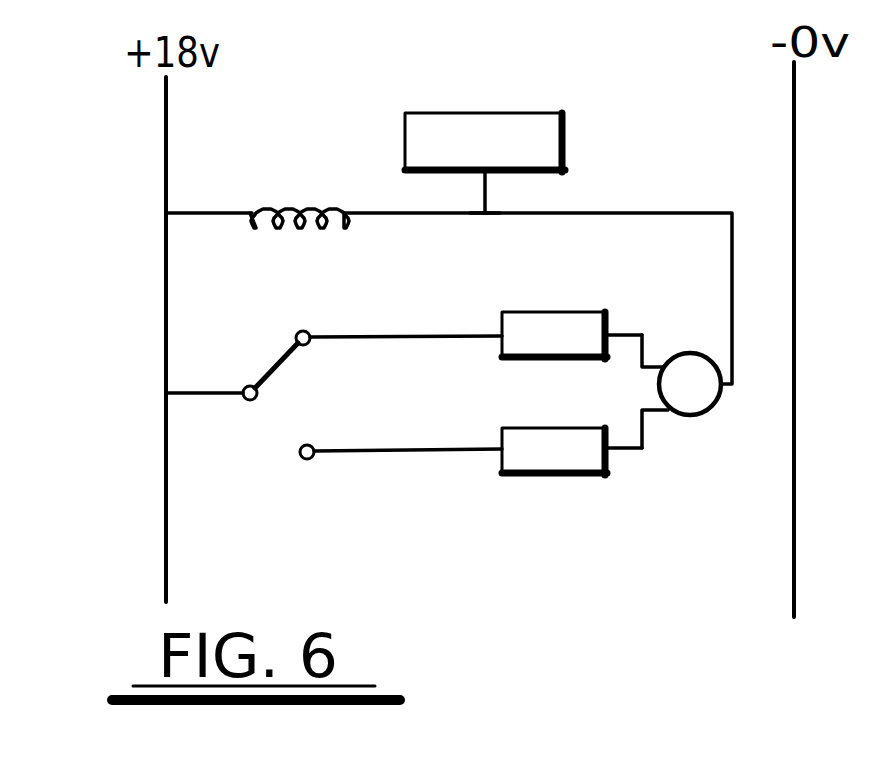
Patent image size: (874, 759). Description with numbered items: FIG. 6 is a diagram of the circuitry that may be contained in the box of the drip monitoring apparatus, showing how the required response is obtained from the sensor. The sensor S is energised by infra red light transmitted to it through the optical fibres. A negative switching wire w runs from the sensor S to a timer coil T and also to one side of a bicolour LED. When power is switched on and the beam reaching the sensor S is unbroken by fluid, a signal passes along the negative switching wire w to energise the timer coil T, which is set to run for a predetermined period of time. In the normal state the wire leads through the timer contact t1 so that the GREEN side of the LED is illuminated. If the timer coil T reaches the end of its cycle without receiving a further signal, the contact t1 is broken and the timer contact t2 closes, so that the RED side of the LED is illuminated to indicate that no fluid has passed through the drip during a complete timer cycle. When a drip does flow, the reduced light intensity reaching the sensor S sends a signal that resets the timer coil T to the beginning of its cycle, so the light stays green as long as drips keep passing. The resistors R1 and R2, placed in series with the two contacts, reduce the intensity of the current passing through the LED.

The timer coil T is at (297, 197).
The sensor S is at (485, 163).
The negative switching wire w is at (482, 188).
The timer contact t1 is at (295, 330).
The timer contact t2 is at (298, 465).
The resistor R1 is at (533, 330).
The resistor R2 is at (558, 445).
The green side of the LED GREEN is at (673, 270).
The red side of the LED RED is at (648, 457).
The bicolour LED is at (682, 385).